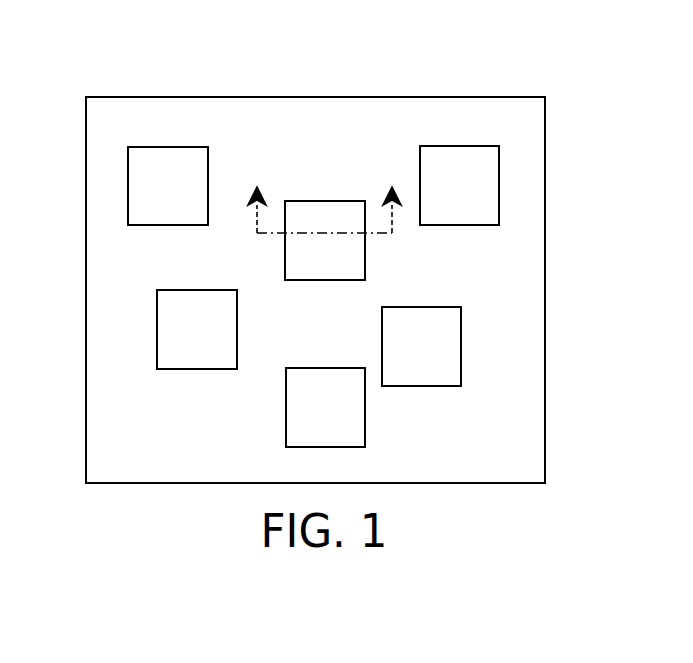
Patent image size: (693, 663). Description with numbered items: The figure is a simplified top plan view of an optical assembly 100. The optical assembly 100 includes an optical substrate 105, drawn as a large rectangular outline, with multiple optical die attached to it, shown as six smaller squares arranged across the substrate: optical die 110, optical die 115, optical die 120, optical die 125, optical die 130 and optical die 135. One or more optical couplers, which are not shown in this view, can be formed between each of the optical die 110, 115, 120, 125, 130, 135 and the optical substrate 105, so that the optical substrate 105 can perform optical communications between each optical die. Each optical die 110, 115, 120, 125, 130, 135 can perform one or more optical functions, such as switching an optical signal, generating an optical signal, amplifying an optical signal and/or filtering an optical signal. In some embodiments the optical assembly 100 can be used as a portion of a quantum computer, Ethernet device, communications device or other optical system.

The optical assembly 100 is at (598, 108).
The optical substrate 105 is at (533, 298).
The optical die 110 is at (142, 202).
The optical die 115 is at (218, 347).
The optical die 120 is at (348, 268).
The optical die 125 is at (346, 426).
The optical die 130 is at (483, 201).
The optical die 135 is at (445, 367).